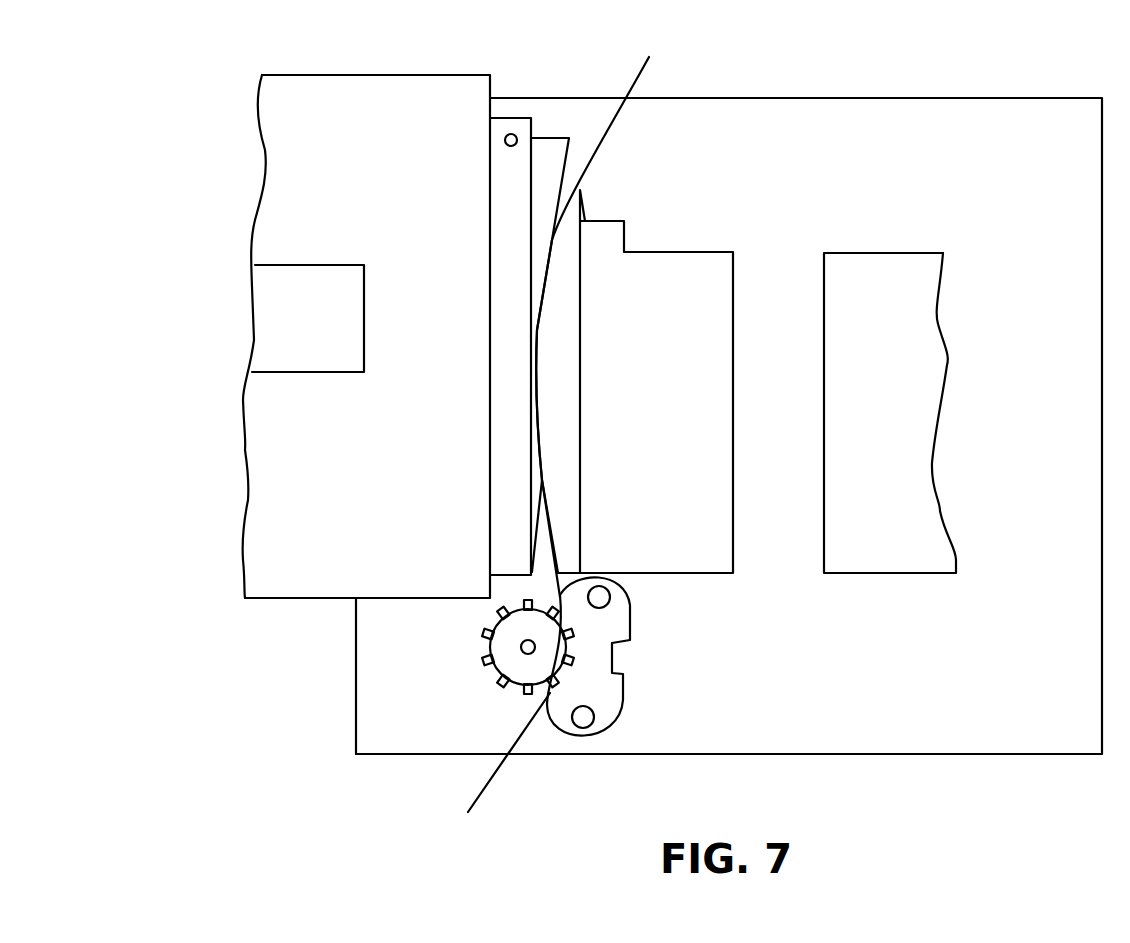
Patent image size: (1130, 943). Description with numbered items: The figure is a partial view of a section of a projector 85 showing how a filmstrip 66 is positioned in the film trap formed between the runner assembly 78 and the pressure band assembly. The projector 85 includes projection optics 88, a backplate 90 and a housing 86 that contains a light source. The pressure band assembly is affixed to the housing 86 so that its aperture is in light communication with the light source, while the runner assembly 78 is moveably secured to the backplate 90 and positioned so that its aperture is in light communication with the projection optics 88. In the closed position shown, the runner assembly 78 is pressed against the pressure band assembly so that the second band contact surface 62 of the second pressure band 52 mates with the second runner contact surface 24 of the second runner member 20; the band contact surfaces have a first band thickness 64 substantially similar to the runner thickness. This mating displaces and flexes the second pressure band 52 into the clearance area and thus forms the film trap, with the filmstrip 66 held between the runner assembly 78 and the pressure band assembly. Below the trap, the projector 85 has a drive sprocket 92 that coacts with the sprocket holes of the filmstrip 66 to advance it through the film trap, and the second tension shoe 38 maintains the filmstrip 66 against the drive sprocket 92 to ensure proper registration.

The second runner member 20 is at (571, 223).
The second runner contact surface 24 is at (582, 192).
The second tension shoe 38 is at (608, 705).
The second pressure band 52 is at (540, 133).
The second band contact surface 62 is at (570, 150).
The first band thickness 64 is at (540, 74).
The filmstrip 66 is at (644, 74).
The runner assembly 78 is at (762, 152).
The projector 85 is at (260, 760).
The housing 86 is at (279, 214).
The projection optics 88 is at (923, 295).
The backplate 90 is at (948, 733).
The drive sprocket 92 is at (517, 673).